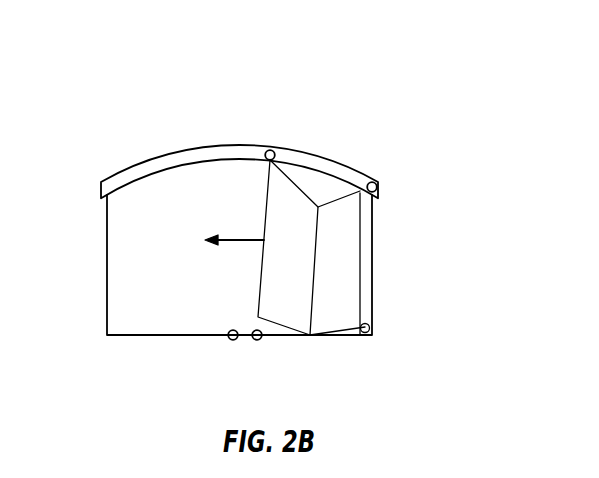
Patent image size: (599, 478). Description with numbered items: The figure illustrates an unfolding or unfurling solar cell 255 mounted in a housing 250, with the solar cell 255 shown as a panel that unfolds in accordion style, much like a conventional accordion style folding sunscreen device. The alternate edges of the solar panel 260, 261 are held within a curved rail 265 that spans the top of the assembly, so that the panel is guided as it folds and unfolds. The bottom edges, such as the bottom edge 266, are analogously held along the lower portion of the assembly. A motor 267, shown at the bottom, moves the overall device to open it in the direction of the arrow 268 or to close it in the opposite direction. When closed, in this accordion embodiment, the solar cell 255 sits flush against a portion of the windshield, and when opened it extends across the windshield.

The housing 250 is at (123, 253).
The solar cell 255 is at (340, 253).
The edge of the solar panel 260 is at (270, 150).
The edge of the solar panel 261 is at (377, 189).
The rail 265 is at (322, 157).
The bottom edge 266 is at (258, 341).
The motor 267 is at (233, 341).
The arrow 268 is at (236, 240).